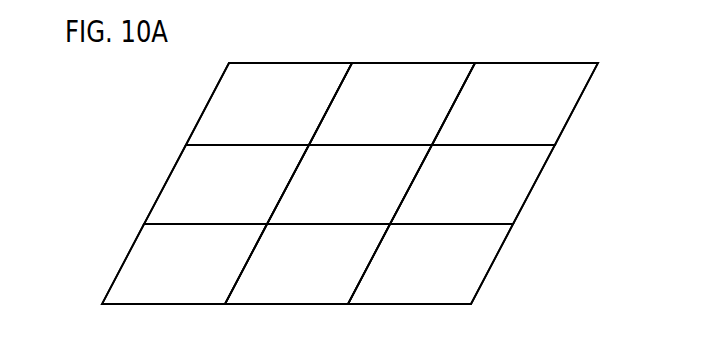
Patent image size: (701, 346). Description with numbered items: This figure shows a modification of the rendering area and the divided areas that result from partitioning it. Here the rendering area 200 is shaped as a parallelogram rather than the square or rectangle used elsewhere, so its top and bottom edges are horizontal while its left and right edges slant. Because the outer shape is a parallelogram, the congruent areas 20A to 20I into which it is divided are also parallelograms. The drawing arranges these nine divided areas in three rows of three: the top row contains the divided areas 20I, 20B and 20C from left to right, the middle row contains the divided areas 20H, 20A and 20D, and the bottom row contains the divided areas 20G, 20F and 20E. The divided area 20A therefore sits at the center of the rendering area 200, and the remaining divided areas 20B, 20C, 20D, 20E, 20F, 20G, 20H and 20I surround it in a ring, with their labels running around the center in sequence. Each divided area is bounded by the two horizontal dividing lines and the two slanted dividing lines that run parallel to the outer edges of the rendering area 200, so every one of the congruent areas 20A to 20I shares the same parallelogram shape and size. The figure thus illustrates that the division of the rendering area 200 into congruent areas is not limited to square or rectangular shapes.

The rendering area 200 is at (417, 63).
The divided area 20A is at (349, 184).
The divided area 20B is at (392, 104).
The divided area 20C is at (515, 104).
The divided area 20D is at (472, 184).
The divided area 20E is at (430, 264).
The divided area 20F is at (307, 264).
The divided area 20G is at (184, 264).
The divided area 20H is at (226, 184).
The divided area 20I is at (269, 104).